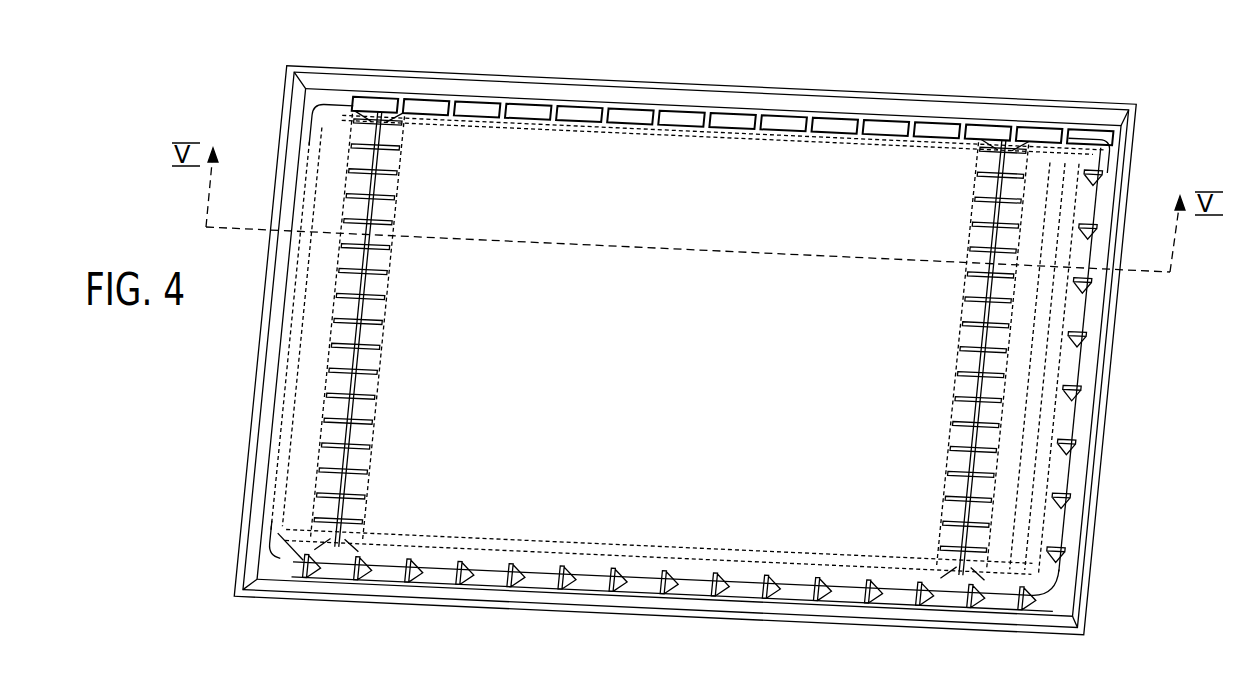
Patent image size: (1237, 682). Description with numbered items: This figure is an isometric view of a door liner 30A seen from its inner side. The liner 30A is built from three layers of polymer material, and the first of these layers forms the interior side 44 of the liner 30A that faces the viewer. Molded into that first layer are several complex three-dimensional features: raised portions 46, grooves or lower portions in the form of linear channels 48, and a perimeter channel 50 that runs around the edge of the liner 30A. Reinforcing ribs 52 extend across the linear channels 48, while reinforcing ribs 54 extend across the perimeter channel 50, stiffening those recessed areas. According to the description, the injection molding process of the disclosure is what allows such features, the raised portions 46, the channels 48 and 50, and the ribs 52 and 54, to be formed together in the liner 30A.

The liner 30A is at (1083, 97).
The interior side 44 is at (772, 160).
The raised portions 46 is at (335, 133).
The linear channels 48 is at (383, 118).
The perimeter channel 50 is at (583, 582).
The reinforcing ribs 52 is at (390, 134).
The reinforcing ribs 54 is at (1093, 432).